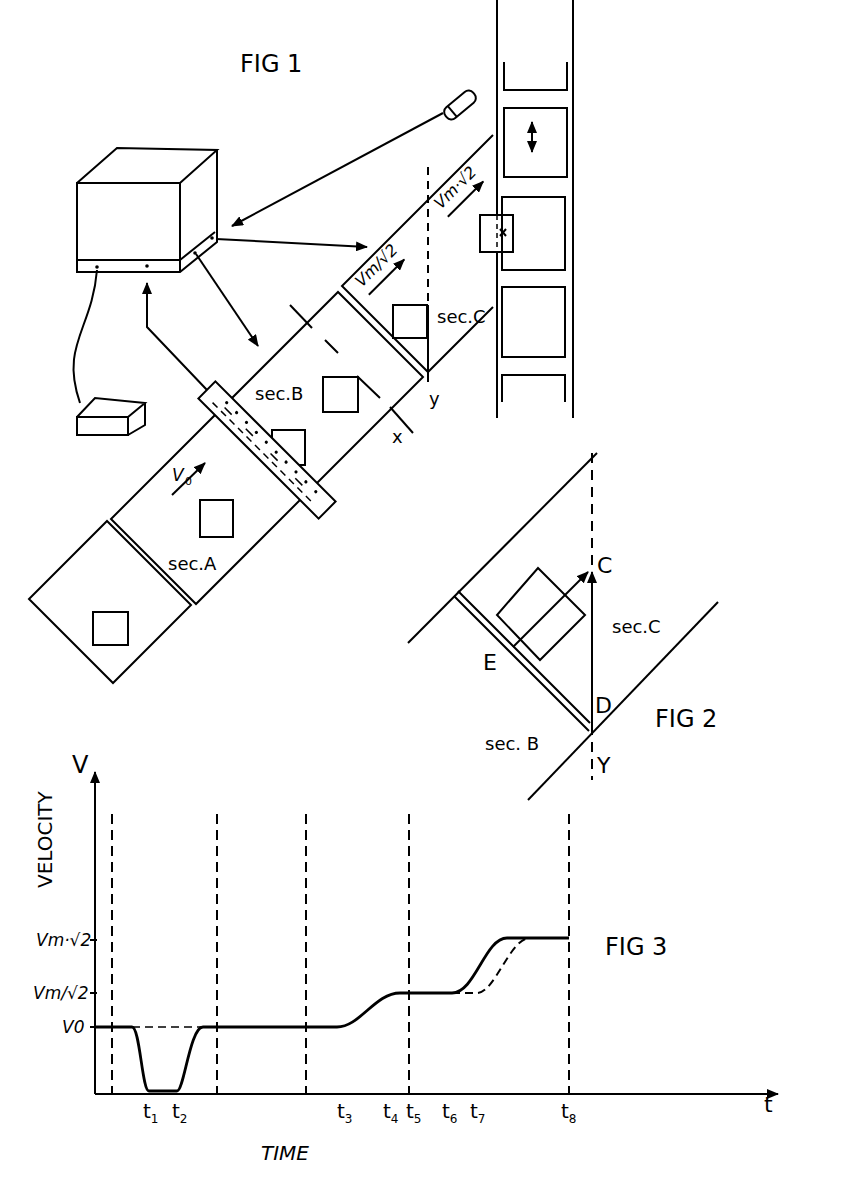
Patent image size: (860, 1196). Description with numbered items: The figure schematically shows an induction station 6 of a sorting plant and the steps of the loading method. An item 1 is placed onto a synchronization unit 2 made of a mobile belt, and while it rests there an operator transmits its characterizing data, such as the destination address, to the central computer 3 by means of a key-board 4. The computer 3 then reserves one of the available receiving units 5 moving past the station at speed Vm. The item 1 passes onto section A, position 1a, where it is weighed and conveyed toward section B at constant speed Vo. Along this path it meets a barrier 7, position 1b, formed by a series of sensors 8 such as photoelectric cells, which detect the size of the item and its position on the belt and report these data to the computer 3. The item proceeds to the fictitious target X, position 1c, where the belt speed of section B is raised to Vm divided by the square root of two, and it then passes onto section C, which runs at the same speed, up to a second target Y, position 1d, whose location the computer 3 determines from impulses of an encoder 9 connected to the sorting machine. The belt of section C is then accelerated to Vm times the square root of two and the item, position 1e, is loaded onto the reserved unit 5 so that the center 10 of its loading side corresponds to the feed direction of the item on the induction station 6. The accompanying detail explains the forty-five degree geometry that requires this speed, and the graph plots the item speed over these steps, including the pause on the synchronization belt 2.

In FIG. 1, the item 1 is at (105, 637).
In FIG. 2, the item 1 is at (522, 592).
In FIG. 1, the item position on section A 1a is at (230, 517).
In FIG. 1, the item position at barrier 1b is at (305, 446).
In FIG. 1, the item position at target X 1c is at (338, 378).
In FIG. 1, the item position at target Y 1d is at (427, 318).
In FIG. 1, the item position at loading 1e is at (480, 229).
In FIG. 1, the synchronization unit 2 is at (163, 625).
In FIG. 1, the central computer 3 is at (185, 148).
In FIG. 1, the key-board 4 is at (118, 403).
In FIG. 1, the receiving units 5 is at (560, 130).
In FIG. 1, the induction station 6 is at (365, 464).
In FIG. 1, the barrier 7 is at (257, 477).
In FIG. 1, the sensors 8 is at (289, 495).
In FIG. 1, the encoder 9 is at (458, 98).
In FIG. 1, the center of loading side 10 is at (502, 240).